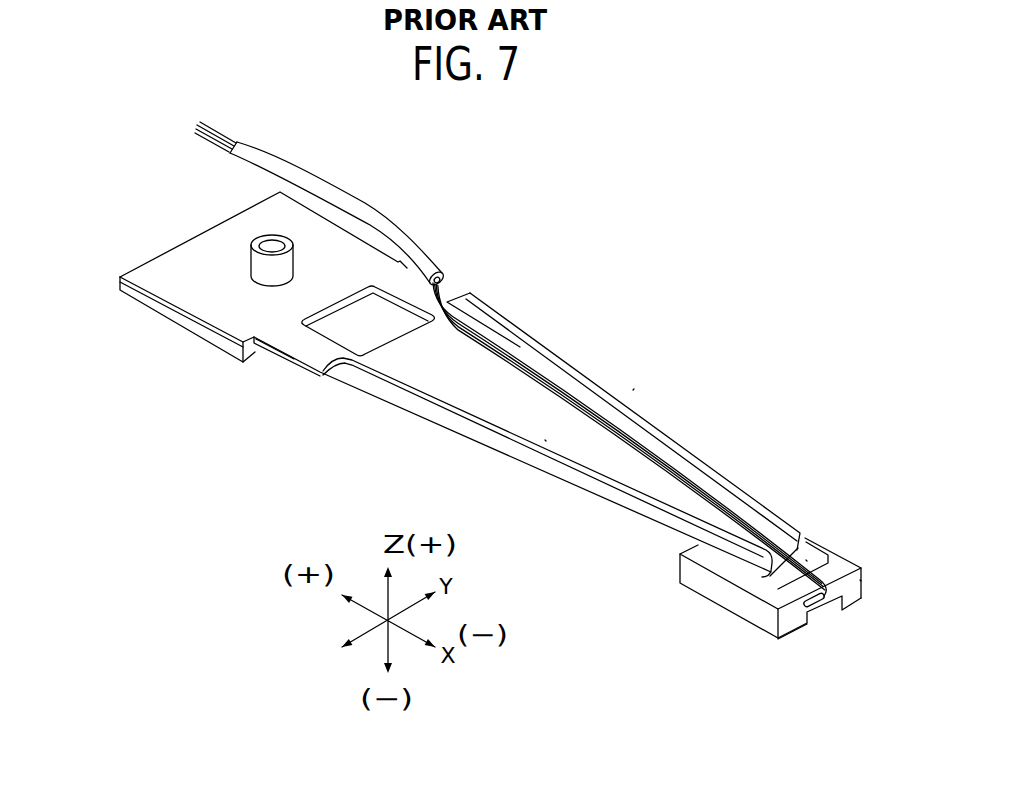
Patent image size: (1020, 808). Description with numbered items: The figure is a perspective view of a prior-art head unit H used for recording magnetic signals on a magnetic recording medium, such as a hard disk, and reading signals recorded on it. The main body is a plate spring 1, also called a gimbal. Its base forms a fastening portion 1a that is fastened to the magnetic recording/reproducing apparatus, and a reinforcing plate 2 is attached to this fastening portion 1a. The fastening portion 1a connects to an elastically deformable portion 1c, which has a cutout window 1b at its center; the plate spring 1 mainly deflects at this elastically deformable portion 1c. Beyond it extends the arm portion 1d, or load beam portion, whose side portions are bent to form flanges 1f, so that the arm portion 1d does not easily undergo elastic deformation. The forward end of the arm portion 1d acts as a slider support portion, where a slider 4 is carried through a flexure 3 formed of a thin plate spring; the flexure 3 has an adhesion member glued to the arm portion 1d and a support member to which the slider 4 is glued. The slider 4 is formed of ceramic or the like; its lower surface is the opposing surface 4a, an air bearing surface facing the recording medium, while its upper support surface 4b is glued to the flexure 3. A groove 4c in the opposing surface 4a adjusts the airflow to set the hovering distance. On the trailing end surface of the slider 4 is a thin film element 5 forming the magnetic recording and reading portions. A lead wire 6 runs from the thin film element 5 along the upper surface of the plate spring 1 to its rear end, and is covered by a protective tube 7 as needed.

The plate spring 1 is at (428, 439).
The fastening portion 1a is at (160, 287).
The cutout window 1b is at (360, 320).
The elastically deformable portion 1c is at (293, 342).
The arm portion 1d is at (538, 422).
The flanges 1f is at (562, 370).
The reinforcing plate 2 is at (193, 331).
The flexure 3 is at (807, 560).
The slider 4 is at (794, 600).
The opposing surface 4a is at (790, 637).
The support surface 4b is at (843, 562).
The groove 4c is at (828, 617).
The thin film element 5 is at (863, 583).
The lead wire 6 is at (673, 470).
The protective tube 7 is at (387, 215).
The head unit H is at (641, 383).